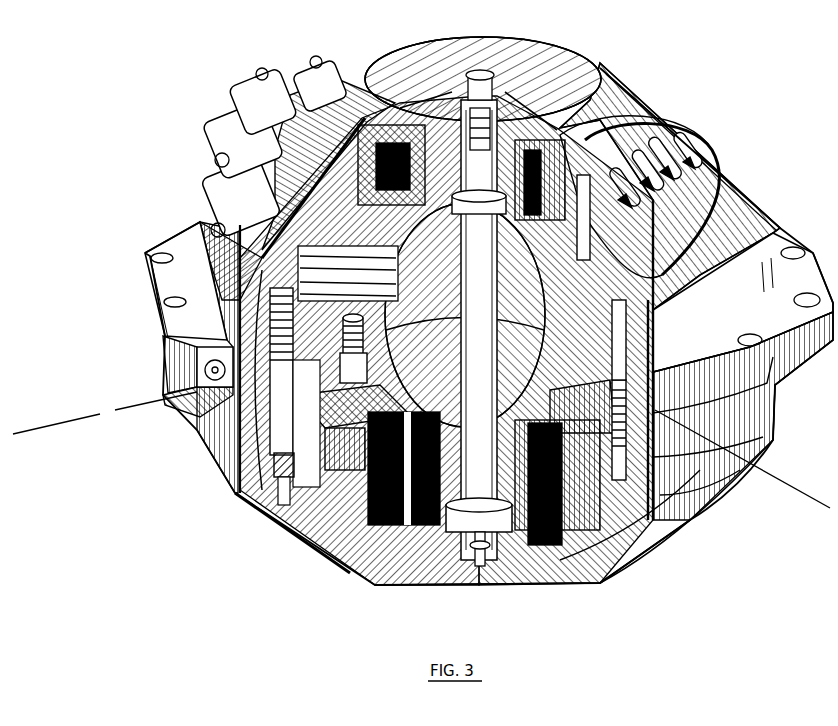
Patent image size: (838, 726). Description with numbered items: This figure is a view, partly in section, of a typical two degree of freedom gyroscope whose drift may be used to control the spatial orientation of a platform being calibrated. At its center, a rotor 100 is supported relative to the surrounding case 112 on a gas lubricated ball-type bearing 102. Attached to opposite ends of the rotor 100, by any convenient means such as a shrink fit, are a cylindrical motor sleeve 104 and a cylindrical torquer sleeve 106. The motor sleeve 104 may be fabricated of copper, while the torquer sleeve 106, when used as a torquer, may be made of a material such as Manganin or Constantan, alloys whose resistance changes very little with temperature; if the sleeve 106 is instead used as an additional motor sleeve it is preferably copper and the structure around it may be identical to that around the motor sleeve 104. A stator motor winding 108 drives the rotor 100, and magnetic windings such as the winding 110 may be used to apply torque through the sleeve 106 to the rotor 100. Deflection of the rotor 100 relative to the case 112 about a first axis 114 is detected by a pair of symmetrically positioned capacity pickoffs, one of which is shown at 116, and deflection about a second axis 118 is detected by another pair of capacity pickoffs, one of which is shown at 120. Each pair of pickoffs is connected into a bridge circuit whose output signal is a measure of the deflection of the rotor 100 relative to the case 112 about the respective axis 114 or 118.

The rotor 100 is at (340, 311).
The gas lubricated ball-type bearing 102 is at (428, 283).
The cylindrical motor sleeve 104 is at (442, 540).
The cylindrical torquer sleeve 106 is at (420, 100).
The stator motor winding 108 is at (371, 498).
The magnetic winding 110 is at (348, 273).
The case 112 is at (650, 88).
The axis 114 is at (66, 425).
The capacity pickoff 116 is at (655, 510).
The axis 118 is at (797, 489).
The capacity pickoff 120 is at (231, 472).